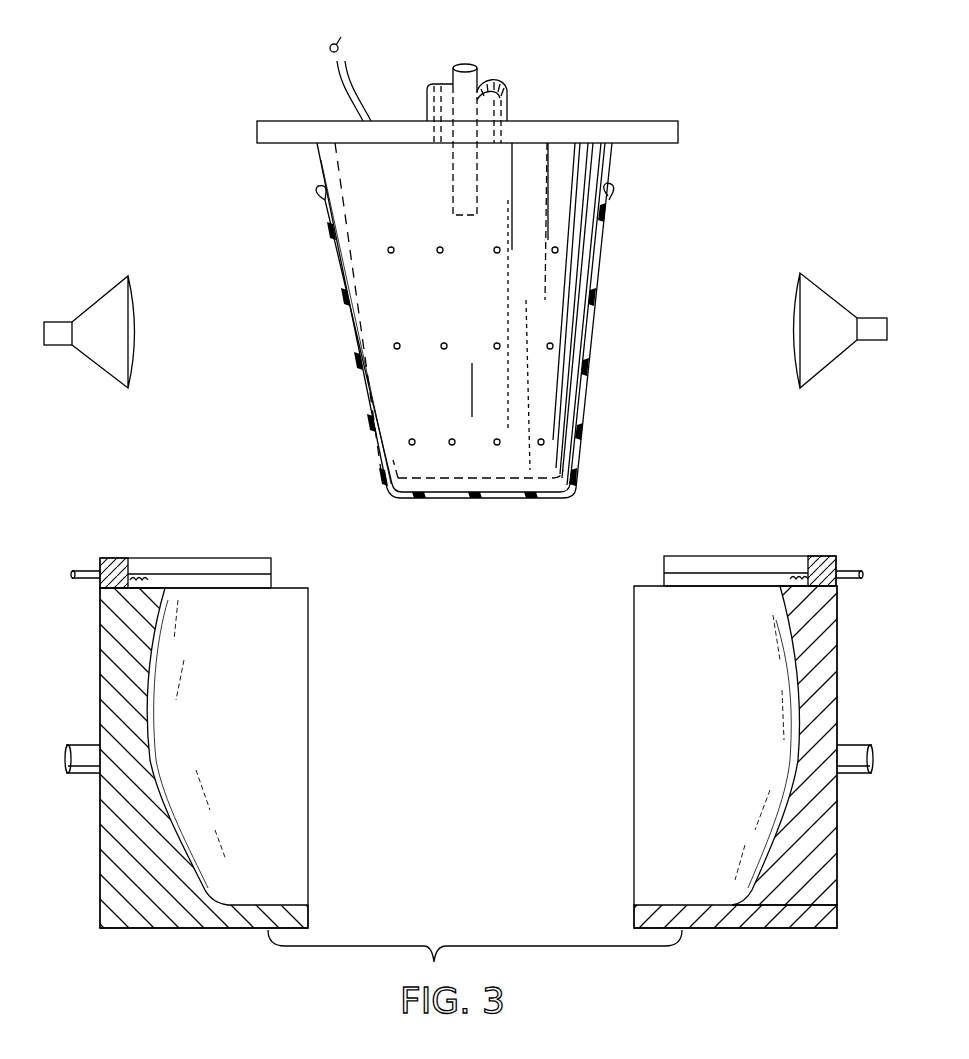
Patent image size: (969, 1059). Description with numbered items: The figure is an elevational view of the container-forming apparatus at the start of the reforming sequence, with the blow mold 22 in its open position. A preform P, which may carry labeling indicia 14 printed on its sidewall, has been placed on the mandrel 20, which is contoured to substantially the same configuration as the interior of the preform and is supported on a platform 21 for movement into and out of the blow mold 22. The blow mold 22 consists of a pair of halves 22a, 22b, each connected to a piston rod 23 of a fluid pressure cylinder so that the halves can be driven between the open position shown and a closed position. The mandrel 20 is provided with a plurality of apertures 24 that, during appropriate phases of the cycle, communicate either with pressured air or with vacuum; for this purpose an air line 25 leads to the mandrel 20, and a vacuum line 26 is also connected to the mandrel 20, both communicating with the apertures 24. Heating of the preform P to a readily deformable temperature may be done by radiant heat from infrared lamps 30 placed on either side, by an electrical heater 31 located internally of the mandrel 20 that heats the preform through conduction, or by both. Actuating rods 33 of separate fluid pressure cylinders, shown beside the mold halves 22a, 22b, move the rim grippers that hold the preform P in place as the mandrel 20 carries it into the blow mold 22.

The labeling indicia 14 is at (614, 192).
The mandrel 20 is at (557, 280).
The platform 21 is at (556, 123).
The blow mold 22 is at (215, 583).
The mold half 22a is at (200, 930).
The mold half 22b is at (720, 930).
The piston rods 23 is at (93, 745).
The apertures 24 is at (549, 343).
The air line 25 is at (462, 68).
The vacuum line 26 is at (497, 80).
The infrared lamps 30 is at (131, 348).
The electrical heater 31 is at (351, 88).
The actuating rods 33 is at (78, 573).
The preform P is at (590, 410).